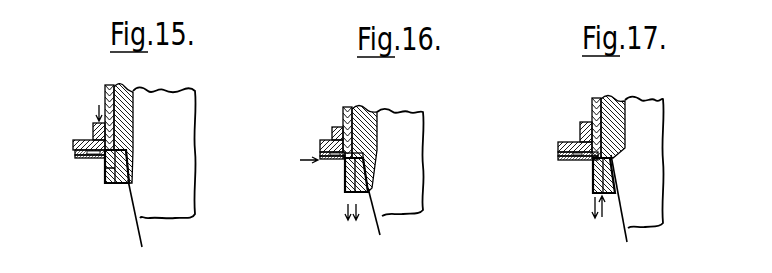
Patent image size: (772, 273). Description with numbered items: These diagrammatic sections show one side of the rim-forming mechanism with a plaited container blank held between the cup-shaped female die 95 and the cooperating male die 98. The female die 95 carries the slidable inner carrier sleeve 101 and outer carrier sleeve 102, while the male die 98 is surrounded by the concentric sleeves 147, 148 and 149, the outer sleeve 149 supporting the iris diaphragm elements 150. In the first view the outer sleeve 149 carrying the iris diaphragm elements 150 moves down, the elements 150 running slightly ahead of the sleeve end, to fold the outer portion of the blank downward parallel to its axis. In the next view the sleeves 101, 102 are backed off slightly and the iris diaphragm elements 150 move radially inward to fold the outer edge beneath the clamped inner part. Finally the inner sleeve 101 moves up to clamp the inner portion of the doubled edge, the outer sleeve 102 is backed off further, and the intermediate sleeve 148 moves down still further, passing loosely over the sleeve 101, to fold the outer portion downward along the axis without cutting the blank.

In FIG. 15, the cup-shaped female die 95 is at (127, 185).
In FIG. 16, the cup-shaped female die 95 is at (368, 196).
In FIG. 17, the cup-shaped female die 95 is at (610, 196).
In FIG. 15, the male die 98 is at (160, 91).
In FIG. 16, the male die 98 is at (412, 112).
In FIG. 17, the male die 98 is at (628, 105).
In FIG. 15, the inner carrier sleeve 101 is at (104, 183).
In FIG. 16, the inner carrier sleeve 101 is at (344, 186).
In FIG. 17, the inner carrier sleeve 101 is at (592, 191).
In FIG. 15, the outer carrier sleeve 102 is at (108, 186).
In FIG. 16, the outer carrier sleeve 102 is at (346, 192).
In FIG. 17, the outer carrier sleeve 102 is at (593, 195).
In FIG. 15, the sleeve 147 is at (125, 87).
In FIG. 16, the sleeve 147 is at (358, 108).
In FIG. 17, the sleeve 147 is at (604, 100).
In FIG. 15, the intermediate sleeve 148 is at (109, 86).
In FIG. 16, the intermediate sleeve 148 is at (347, 106).
In FIG. 17, the intermediate sleeve 148 is at (593, 97).
In FIG. 15, the outer sleeve 149 is at (94, 124).
In FIG. 16, the outer sleeve 149 is at (343, 125).
In FIG. 17, the outer sleeve 149 is at (584, 120).
In FIG. 15, the iris diaphragm elements 150 is at (95, 160).
In FIG. 16, the iris diaphragm elements 150 is at (334, 160).
In FIG. 17, the iris diaphragm elements 150 is at (583, 160).